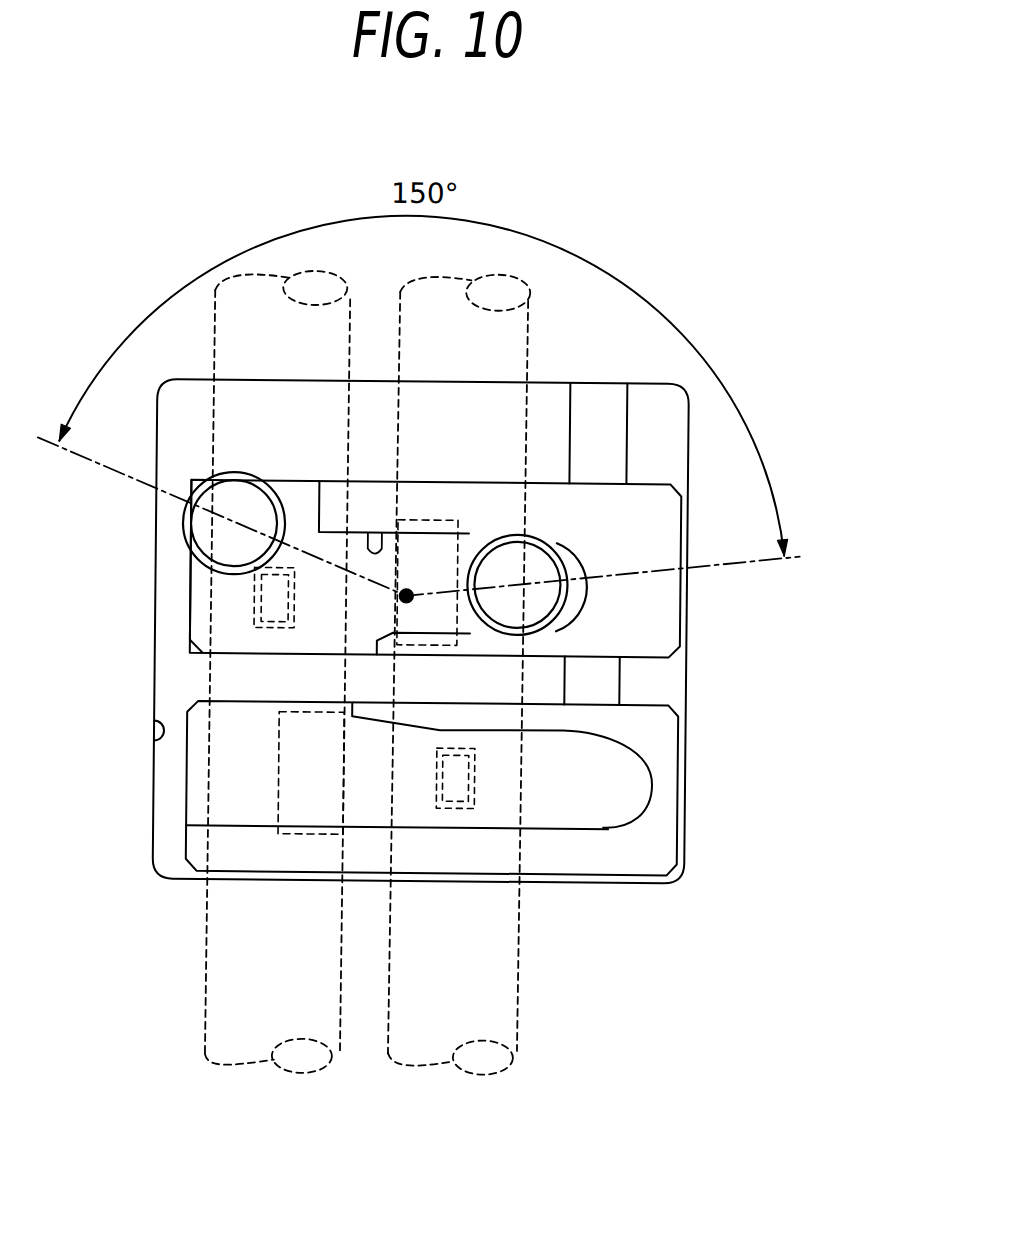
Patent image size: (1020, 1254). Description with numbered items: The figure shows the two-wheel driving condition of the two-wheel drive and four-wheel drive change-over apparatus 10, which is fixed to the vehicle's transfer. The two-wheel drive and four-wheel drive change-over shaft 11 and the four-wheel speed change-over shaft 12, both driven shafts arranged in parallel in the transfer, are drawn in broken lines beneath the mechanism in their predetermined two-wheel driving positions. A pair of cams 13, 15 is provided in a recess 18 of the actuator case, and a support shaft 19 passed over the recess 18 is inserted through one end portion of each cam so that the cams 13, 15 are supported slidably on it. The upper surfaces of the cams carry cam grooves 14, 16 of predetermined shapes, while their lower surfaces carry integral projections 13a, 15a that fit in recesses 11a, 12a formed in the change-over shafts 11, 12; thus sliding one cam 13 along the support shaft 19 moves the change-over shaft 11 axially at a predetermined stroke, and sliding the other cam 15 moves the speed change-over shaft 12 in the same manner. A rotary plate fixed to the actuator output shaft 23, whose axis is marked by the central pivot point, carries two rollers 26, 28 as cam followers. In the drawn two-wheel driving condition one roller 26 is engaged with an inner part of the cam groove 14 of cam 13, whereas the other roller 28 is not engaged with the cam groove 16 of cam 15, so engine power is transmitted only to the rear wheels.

The two-wheel drive and four-wheel drive change-over apparatus 10 is at (762, 672).
The two-wheel drive and four-wheel drive change-over shaft 11 is at (195, 971).
The recess 11a is at (257, 615).
The four-wheel speed change-over shaft 12 is at (535, 1018).
The recess 12a is at (461, 808).
The cam 13 is at (702, 606).
The projection 13a is at (254, 581).
The cam groove 14 is at (381, 534).
The cam 15 is at (702, 831).
The projection 15a is at (478, 772).
The cam groove 16 is at (641, 767).
The recess 18 is at (160, 740).
The support shaft 19 is at (608, 685).
The output shaft 23 is at (404, 598).
The roller 26 is at (566, 565).
The roller 28 is at (239, 476).